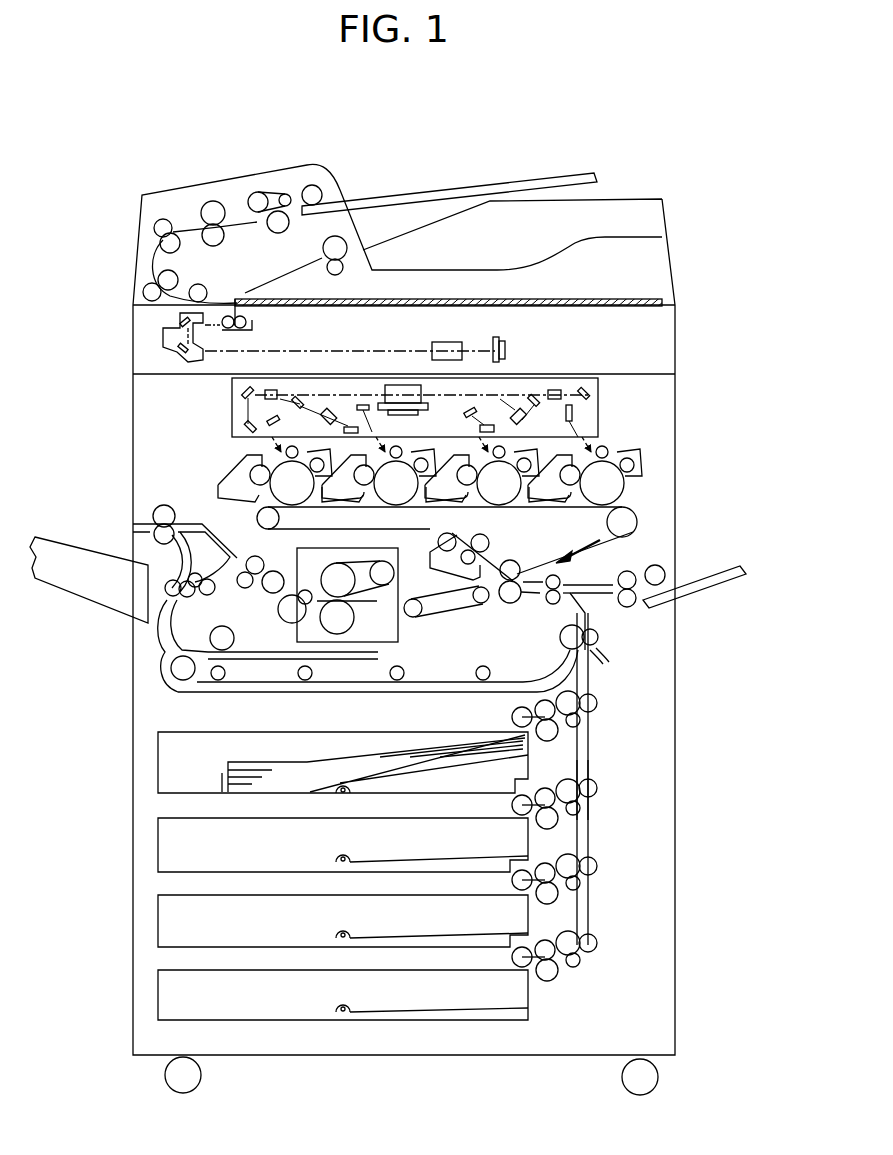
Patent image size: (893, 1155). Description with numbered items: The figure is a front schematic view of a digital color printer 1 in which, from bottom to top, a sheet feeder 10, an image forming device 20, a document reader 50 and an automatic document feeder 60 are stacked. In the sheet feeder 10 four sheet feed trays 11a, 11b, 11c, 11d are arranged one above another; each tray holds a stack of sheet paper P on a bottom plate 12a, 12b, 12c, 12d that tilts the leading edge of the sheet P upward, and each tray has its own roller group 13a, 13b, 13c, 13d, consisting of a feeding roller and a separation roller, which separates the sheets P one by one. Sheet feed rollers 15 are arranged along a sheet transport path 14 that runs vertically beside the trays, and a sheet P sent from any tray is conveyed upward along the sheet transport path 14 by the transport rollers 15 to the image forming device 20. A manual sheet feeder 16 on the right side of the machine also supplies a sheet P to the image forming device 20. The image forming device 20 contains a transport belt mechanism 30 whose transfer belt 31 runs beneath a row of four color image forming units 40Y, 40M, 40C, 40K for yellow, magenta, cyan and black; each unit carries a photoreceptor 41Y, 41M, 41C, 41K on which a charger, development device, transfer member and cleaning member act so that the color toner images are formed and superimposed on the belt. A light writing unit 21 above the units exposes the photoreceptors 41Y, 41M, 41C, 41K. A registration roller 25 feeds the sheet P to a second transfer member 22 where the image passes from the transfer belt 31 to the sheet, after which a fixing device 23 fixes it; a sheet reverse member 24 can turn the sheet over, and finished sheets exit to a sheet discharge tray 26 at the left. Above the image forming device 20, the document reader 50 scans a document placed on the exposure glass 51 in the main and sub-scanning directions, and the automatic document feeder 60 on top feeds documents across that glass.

The digital color printer 1 is at (582, 124).
The sheet feeder 10 is at (686, 903).
The sheet feed tray 11a is at (158, 1000).
The sheet feed tray 11b is at (158, 923).
The sheet feed tray 11c is at (158, 848).
The sheet feed tray 11d is at (158, 762).
The bottom plate 12a is at (395, 1012).
The bottom plate 12b is at (395, 938).
The bottom plate 12c is at (395, 862).
The bottom plate 12d is at (403, 770).
The roller group 13a is at (558, 984).
The roller group 13b is at (558, 908).
The roller group 13c is at (558, 833).
The roller group 13d is at (558, 745).
The sheet transport path 14 is at (588, 818).
The sheet feed roller 15 is at (594, 790).
The manual sheet feeder 16 is at (708, 598).
The image forming device 20 is at (686, 493).
The light writing unit 21 is at (607, 410).
The second transfer member 22 is at (507, 605).
The fixing device 23 is at (406, 631).
The sheet reverse member 24 is at (146, 646).
The registration roller 25 is at (552, 611).
The sheet discharge tray 26 is at (68, 545).
The transport belt mechanism 30 is at (649, 518).
The transfer belt 31 is at (595, 549).
The yellow image forming unit 40Y is at (236, 459).
The magenta image forming unit 40M is at (388, 516).
The cyan image forming unit 40C is at (494, 516).
The black image forming unit 40K is at (648, 455).
The photoreceptor 41Y is at (308, 493).
The photoreceptor 41M is at (413, 493).
The photoreceptor 41C is at (515, 493).
The photoreceptor 41K is at (618, 493).
The document reader 50 is at (684, 346).
The exposure glass 51 is at (565, 298).
The automatic document feeder 60 is at (126, 189).
The sheet P is at (270, 758).